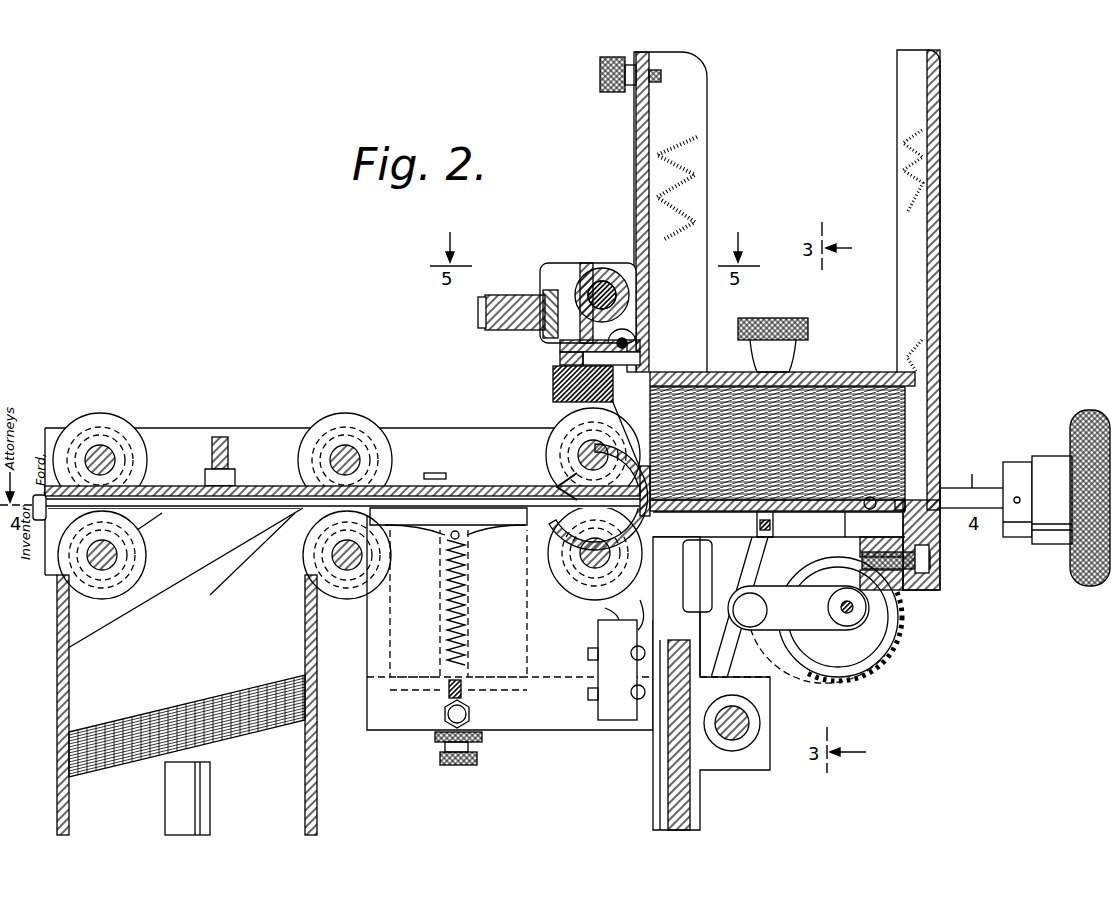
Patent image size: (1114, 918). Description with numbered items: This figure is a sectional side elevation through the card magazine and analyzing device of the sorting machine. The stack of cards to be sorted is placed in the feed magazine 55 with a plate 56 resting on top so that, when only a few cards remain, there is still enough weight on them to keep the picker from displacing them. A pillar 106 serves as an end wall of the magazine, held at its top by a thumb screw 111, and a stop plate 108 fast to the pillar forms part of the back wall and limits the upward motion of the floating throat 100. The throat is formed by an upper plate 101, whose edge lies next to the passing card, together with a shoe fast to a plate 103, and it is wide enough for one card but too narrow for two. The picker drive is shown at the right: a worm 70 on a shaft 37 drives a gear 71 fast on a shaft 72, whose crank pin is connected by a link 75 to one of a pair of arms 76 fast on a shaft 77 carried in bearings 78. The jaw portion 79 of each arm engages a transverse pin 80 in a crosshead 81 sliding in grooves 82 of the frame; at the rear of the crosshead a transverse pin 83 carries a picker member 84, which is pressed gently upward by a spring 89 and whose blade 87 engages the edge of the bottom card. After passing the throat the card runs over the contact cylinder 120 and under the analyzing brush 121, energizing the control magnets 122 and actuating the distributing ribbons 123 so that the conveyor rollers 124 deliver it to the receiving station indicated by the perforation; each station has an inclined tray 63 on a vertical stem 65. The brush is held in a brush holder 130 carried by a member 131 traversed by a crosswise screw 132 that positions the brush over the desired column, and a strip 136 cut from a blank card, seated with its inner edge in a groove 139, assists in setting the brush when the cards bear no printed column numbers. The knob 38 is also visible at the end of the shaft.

The shaft 37 is at (45, 497).
The knurled knob 38 is at (1075, 422).
The feed magazine 55 is at (938, 388).
The plate 56 is at (822, 386).
The inclined tray 63 is at (240, 742).
The vertical stem 65 is at (182, 802).
The worm 70 is at (798, 588).
The gear 71 is at (903, 621).
The shaft 72 is at (893, 658).
The link 75 is at (792, 560).
The arms 76 is at (728, 645).
The shaft 77 is at (742, 730).
The bearings 78 is at (722, 770).
The jaw portion 79 is at (758, 540).
The transverse pin 80 is at (762, 522).
The crosshead 81 is at (748, 525).
The grooves 82 is at (648, 594).
The transverse pin 83 is at (779, 524).
The picker member 84 is at (982, 488).
The blade 87 is at (907, 500).
The spring 89 is at (920, 525).
The floating throat 100 is at (631, 460).
The upper plate 101 is at (630, 478).
The plate 103 is at (647, 510).
The pillar 106 is at (692, 118).
The stop plate 108 is at (646, 345).
The thumb screw 111 is at (600, 78).
The contact cylinder 120 is at (579, 595).
The analyzing brush 121 is at (560, 450).
The control magnets 122 is at (490, 650).
The distributing ribbons 123 is at (500, 496).
The conveyor rollers 124 is at (108, 520).
The brush holder 130 is at (650, 382).
The member 131 is at (588, 268).
The screw 132 is at (602, 290).
The strip 136 is at (506, 294).
The groove 139 is at (480, 305).